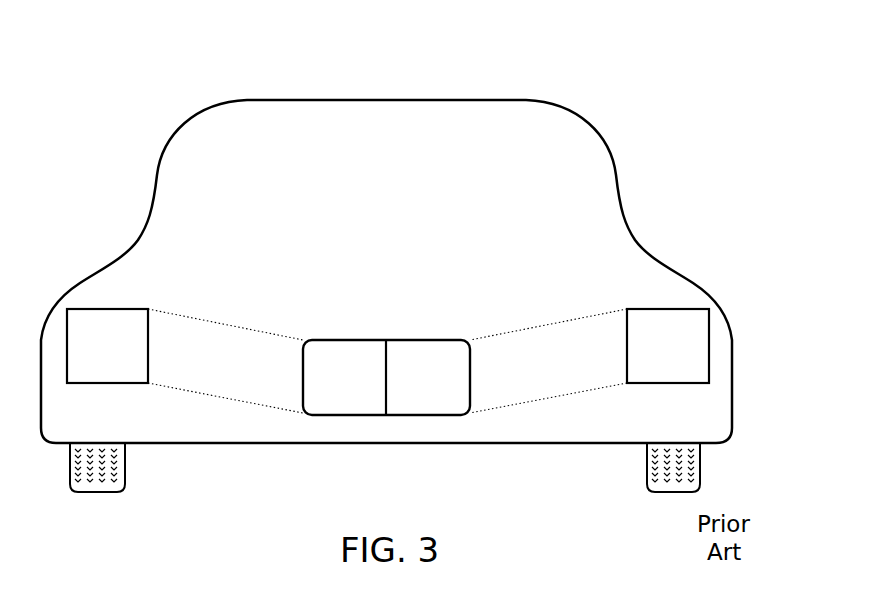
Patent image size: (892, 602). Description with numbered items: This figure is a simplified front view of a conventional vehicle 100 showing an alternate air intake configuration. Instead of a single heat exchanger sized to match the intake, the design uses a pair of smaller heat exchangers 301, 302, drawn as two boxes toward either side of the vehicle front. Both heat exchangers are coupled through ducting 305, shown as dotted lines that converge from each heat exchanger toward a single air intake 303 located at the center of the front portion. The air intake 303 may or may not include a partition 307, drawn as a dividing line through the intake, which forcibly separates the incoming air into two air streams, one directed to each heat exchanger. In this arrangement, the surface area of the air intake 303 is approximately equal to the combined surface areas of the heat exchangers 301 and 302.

The vehicle 100 is at (648, 127).
The heat exchanger 301 is at (128, 308).
The heat exchanger 302 is at (642, 308).
The air intake 303 is at (430, 340).
The ducting 305 is at (222, 326).
The partition 307 is at (386, 370).